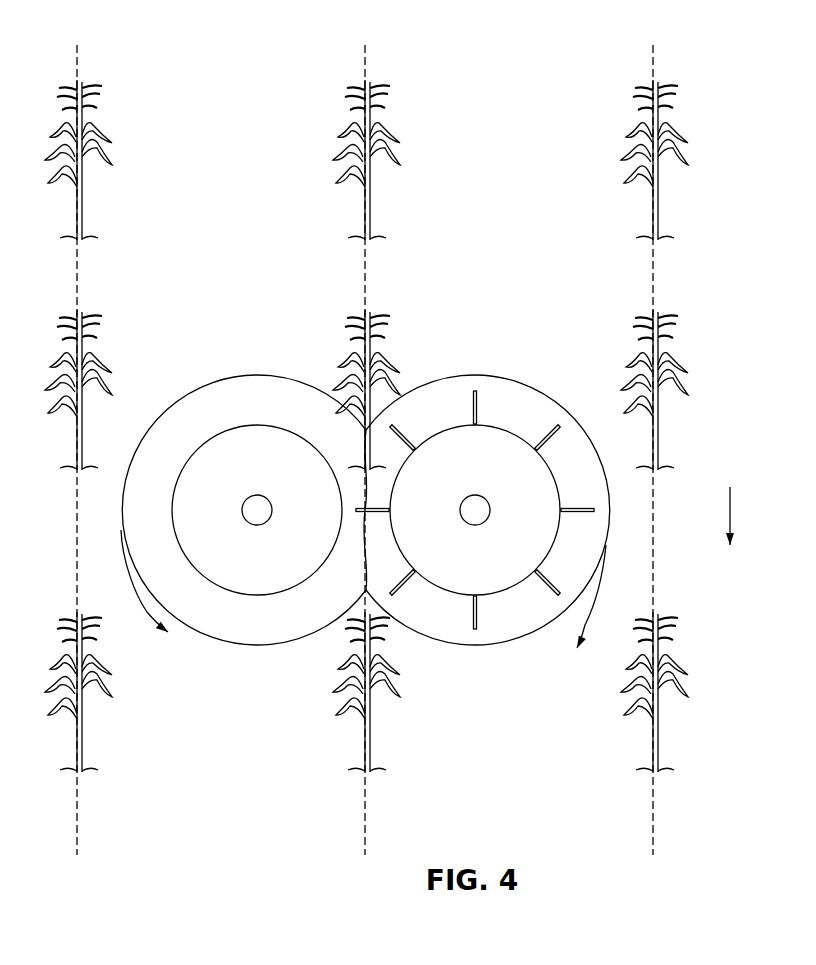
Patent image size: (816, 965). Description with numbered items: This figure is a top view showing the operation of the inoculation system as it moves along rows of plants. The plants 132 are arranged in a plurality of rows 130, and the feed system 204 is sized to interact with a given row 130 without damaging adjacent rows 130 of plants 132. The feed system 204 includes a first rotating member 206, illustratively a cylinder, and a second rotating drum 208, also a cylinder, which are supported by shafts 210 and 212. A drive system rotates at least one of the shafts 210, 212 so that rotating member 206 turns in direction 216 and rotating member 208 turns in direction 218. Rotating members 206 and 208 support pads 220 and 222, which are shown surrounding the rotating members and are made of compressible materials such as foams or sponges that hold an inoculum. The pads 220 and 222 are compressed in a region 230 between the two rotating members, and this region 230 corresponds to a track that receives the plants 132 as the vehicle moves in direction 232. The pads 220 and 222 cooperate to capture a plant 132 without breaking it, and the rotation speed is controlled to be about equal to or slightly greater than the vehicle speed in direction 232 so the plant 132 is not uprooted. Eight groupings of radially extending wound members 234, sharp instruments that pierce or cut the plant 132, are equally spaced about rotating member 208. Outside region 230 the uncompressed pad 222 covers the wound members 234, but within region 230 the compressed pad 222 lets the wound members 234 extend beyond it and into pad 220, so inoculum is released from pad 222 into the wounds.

The row 130 is at (87, 63).
The plant 132 is at (389, 426).
The region 230 is at (395, 343).
The feed system 204 is at (413, 516).
The first rotating member 206 is at (244, 540).
The second rotating drum 208 is at (530, 538).
The shaft 210 is at (477, 510).
The shaft 212 is at (257, 510).
The direction 216 is at (127, 577).
The direction 218 is at (641, 548).
The pad 220 is at (288, 646).
The pad 222 is at (442, 646).
The direction 232 is at (730, 520).
The wound members 234 is at (553, 578).